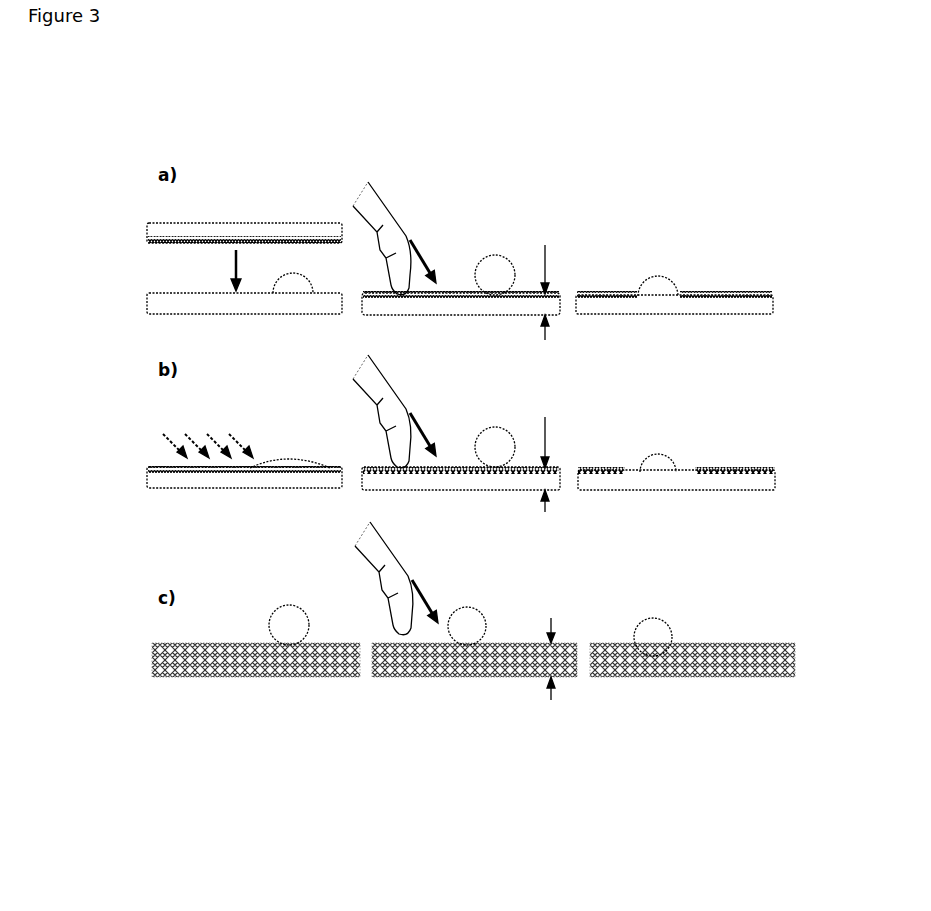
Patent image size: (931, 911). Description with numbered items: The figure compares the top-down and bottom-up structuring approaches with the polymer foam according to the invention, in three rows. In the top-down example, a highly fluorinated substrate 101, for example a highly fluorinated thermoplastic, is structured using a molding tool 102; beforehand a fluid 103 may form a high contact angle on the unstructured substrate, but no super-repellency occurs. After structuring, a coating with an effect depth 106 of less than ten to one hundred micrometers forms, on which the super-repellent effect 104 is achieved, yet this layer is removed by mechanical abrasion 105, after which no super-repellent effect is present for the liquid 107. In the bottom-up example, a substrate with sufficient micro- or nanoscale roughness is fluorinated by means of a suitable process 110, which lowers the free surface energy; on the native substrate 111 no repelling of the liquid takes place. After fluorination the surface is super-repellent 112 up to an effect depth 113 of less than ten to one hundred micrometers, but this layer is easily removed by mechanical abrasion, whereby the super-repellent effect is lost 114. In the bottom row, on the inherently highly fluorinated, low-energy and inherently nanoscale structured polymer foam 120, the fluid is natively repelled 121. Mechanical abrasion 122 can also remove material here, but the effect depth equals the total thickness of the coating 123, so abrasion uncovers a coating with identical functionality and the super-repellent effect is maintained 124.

The highly fluorinated substrate 101 is at (244, 318).
The molding tool 102 is at (244, 244).
The fluid 103 is at (309, 277).
The super-repellent effect 104 is at (495, 263).
The mechanical abrasion 105 is at (402, 238).
The effect depth 106 is at (545, 279).
The liquid 107 is at (672, 278).
The fluorination process 110 is at (195, 433).
The native substrate 111 is at (290, 449).
The super-repellent surface 112 is at (434, 411).
The effect depth 113 is at (545, 451).
The lost super-repellent effect 114 is at (663, 453).
The polymer foam 120 is at (256, 677).
The natively repelled fluid 121 is at (289, 611).
The mechanical abrasion 122 is at (422, 583).
The effect depth equal to total coating thickness 123 is at (547, 647).
The maintained super-repellent effect 124 is at (668, 629).